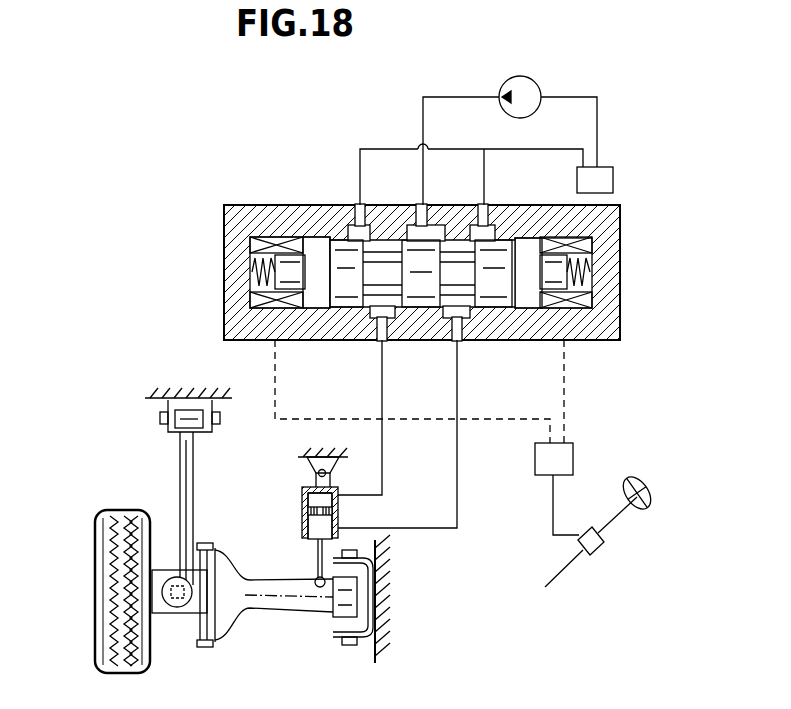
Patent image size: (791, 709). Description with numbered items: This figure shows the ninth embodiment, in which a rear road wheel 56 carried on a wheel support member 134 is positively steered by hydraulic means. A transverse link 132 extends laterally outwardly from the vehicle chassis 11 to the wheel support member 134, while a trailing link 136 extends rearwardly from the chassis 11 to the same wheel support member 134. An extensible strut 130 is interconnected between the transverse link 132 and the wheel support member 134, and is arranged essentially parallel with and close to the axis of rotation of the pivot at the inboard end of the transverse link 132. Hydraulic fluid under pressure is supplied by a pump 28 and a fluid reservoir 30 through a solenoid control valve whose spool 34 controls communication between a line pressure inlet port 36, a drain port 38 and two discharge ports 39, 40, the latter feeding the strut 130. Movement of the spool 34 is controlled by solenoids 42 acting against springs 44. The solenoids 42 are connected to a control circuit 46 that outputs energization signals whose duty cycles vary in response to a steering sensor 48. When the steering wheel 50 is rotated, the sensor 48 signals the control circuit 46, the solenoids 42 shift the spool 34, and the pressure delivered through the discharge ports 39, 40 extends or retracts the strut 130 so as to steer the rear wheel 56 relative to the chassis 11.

The vehicle chassis 11 is at (382, 623).
The pump 28 is at (516, 82).
The fluid reservoir 30 is at (602, 172).
The spool 34 is at (233, 198).
The line pressure inlet port 36 is at (421, 206).
The drain port 38 is at (357, 206).
The discharge port 39 is at (385, 341).
The discharge port 40 is at (460, 339).
The solenoid 42 is at (250, 244).
The spring 44 is at (252, 275).
The control circuit 46 is at (541, 462).
The steering sensor 48 is at (580, 543).
The steering wheel 50 is at (638, 511).
The rear road wheel 56 is at (103, 633).
The extensible strut 130 is at (303, 507).
The transverse link 132 is at (238, 605).
The wheel support member 134 is at (160, 600).
The trailing link 136 is at (185, 470).